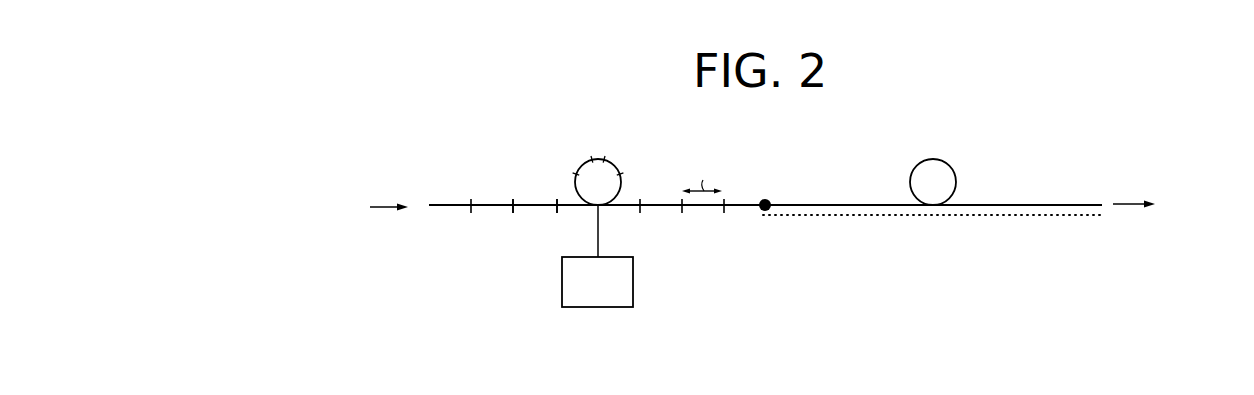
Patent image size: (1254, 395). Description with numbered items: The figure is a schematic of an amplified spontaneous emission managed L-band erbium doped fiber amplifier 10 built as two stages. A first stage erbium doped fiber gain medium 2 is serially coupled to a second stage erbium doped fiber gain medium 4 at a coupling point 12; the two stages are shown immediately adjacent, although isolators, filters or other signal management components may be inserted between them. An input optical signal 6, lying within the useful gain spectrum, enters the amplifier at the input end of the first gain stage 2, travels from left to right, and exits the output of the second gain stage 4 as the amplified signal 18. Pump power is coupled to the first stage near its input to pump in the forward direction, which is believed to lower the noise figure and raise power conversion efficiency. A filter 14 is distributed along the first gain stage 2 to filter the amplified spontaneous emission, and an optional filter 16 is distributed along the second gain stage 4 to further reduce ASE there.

The first stage erbium doped fiber gain medium 2 is at (598, 158).
The second stage erbium doped fiber gain medium 4 is at (922, 159).
The input optical signal 6 is at (312, 229).
The ASE managed L-band erbium doped fiber amplifier 10 is at (1088, 115).
The coupling point 12 is at (748, 217).
The filter 14 is at (537, 188).
The filter 16 is at (1055, 220).
The amplified signal 18 is at (1201, 199).